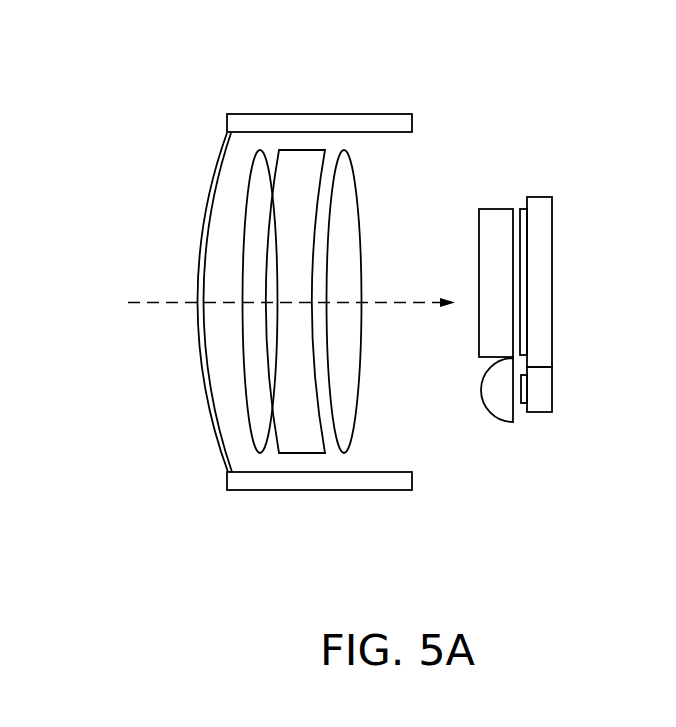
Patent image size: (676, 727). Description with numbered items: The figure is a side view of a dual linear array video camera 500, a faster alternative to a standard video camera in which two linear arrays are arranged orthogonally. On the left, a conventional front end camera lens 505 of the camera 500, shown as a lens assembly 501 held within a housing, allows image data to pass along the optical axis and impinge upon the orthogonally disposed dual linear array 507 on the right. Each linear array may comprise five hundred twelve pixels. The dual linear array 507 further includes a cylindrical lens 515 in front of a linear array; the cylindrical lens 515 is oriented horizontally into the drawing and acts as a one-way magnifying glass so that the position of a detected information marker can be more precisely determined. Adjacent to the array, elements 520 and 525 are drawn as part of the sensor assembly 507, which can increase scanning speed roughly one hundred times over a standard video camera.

The dual linear array video camera 500 is at (491, 109).
The lens assembly 501 is at (169, 251).
The front end camera lens 505 is at (355, 113).
The dual linear array 507 is at (588, 447).
The cylindrical lens 515 is at (483, 388).
The circuit board 520 is at (552, 274).
The connector 525 is at (553, 385).